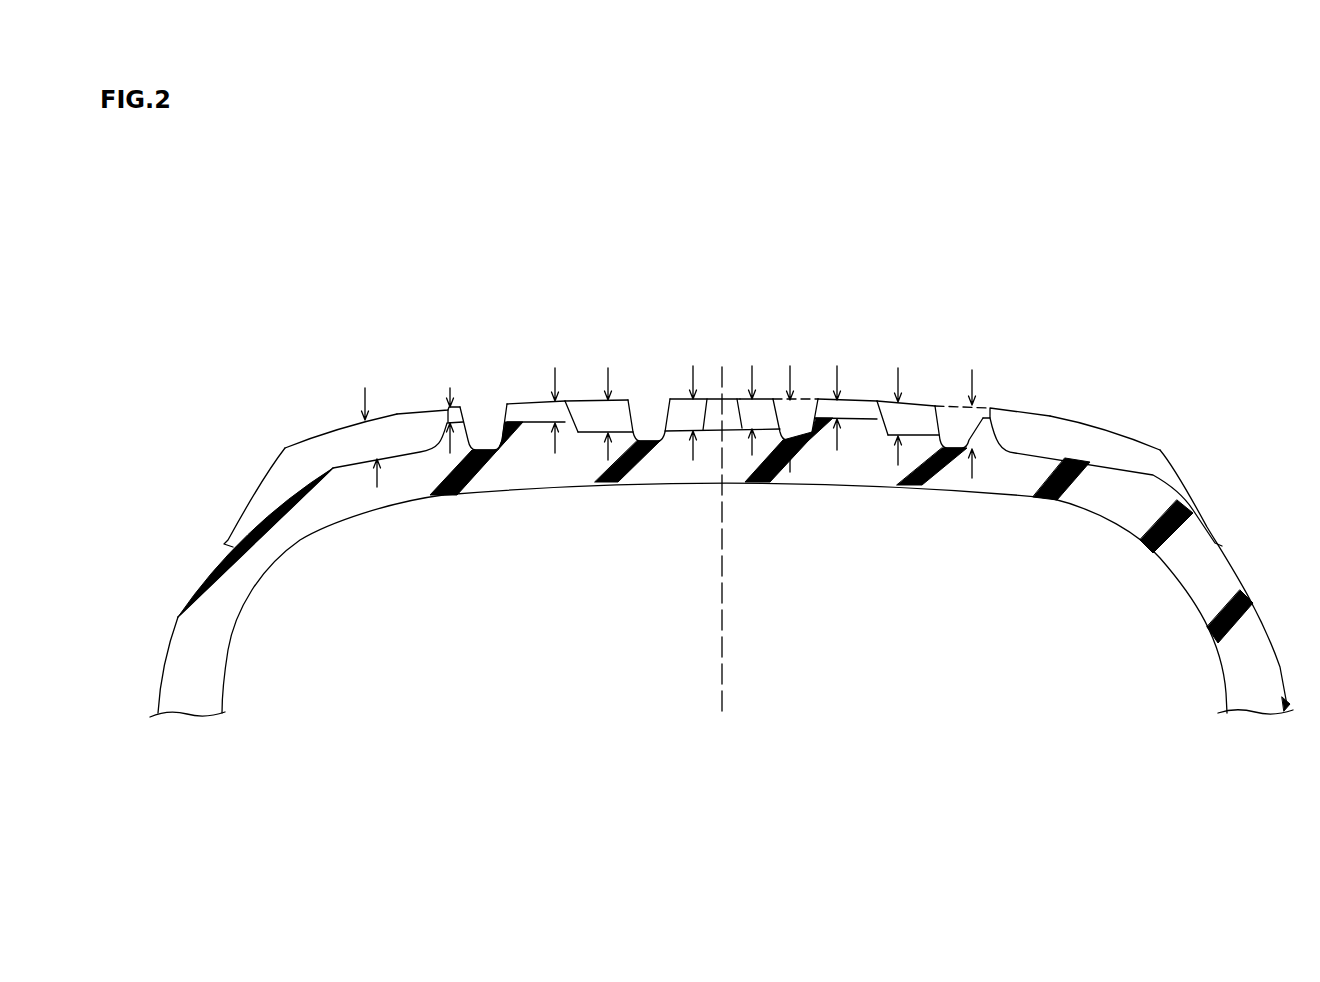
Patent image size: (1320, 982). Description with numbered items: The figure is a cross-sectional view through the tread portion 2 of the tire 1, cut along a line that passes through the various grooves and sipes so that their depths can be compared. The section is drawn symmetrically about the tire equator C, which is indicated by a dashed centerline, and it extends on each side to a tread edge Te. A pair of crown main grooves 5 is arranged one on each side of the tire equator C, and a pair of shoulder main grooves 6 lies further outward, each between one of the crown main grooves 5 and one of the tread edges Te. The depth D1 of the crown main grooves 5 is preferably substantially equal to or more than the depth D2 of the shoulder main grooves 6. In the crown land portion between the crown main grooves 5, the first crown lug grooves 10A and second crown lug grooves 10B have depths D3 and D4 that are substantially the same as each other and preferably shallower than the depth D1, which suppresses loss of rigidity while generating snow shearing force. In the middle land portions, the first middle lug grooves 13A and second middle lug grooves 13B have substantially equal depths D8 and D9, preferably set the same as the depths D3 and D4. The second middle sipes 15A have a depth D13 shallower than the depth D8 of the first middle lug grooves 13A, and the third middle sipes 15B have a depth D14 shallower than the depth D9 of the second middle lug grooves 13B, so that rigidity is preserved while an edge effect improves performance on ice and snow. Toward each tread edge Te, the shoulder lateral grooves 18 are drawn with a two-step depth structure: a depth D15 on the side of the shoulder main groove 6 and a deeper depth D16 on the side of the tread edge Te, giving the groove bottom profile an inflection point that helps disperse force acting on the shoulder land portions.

The tire 1 is at (1232, 242).
The tread portion 2 is at (1128, 327).
The crown main grooves 5 is at (650, 438).
The shoulder main grooves 6 is at (485, 435).
The shoulder lateral grooves 18 is at (400, 430).
The second middle sipes 15A is at (527, 418).
The first middle lug grooves 13A is at (598, 422).
The first crown lug grooves 10A is at (680, 420).
The second crown lug grooves 10B is at (765, 422).
The third middle sipes 15B is at (855, 425).
The second middle lug grooves 13B is at (916, 424).
The tread edges Te is at (285, 447).
The tire equator C is at (721, 528).
The depth of crown main grooves D1 is at (790, 435).
The depth of shoulder main grooves D2 is at (972, 440).
The depth of first crown lug grooves D3 is at (685, 423).
The depth of second crown lug grooves D4 is at (750, 425).
The depth of first middle lug grooves D8 is at (600, 424).
The depth of second middle lug grooves D9 is at (900, 428).
The depth of second middle sipe D13 is at (550, 425).
The depth of third middle sipe D14 is at (838, 425).
The depth of shoulder lateral groove on shoulder main groove side D15 is at (447, 430).
The depth of shoulder lateral groove on tread edge side D16 is at (370, 443).